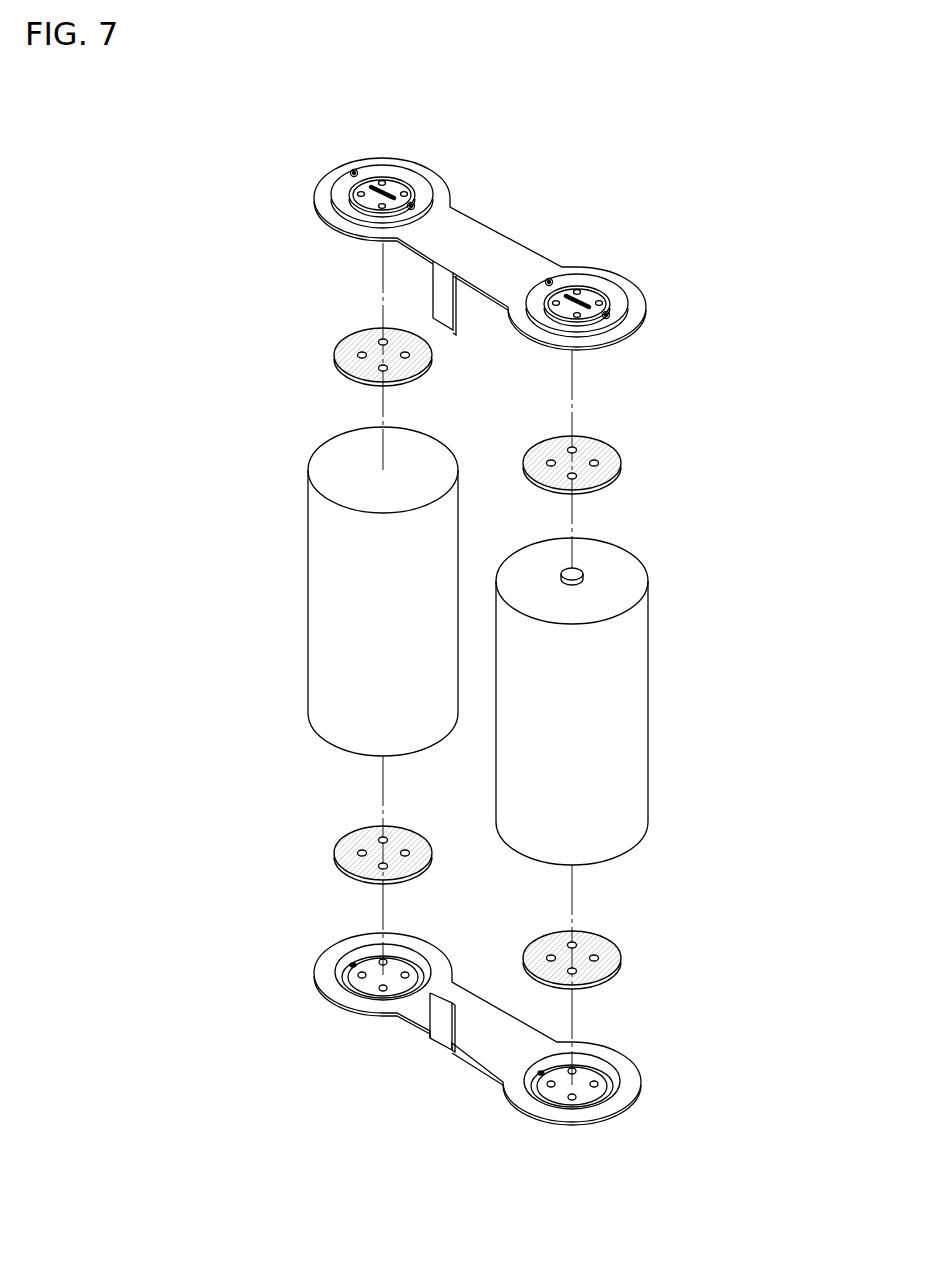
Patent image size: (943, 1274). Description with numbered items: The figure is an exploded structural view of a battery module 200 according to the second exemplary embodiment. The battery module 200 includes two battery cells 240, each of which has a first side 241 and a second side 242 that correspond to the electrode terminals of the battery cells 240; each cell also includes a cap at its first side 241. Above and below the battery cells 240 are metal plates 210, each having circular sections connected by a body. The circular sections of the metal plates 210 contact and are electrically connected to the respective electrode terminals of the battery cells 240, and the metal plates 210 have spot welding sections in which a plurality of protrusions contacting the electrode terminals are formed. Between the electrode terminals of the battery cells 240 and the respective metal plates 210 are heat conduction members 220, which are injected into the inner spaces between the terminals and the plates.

The battery module 200 is at (329, 126).
The metal plate 210 is at (485, 237).
The heat conduction member 220 is at (347, 363).
The battery cell 240 is at (325, 585).
The first side 241 is at (335, 450).
The second side 242 is at (352, 740).